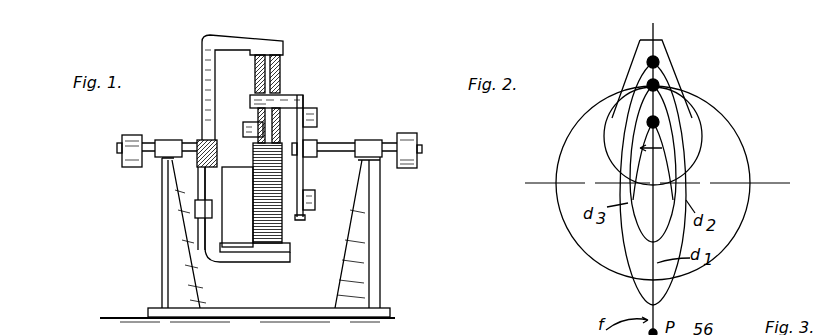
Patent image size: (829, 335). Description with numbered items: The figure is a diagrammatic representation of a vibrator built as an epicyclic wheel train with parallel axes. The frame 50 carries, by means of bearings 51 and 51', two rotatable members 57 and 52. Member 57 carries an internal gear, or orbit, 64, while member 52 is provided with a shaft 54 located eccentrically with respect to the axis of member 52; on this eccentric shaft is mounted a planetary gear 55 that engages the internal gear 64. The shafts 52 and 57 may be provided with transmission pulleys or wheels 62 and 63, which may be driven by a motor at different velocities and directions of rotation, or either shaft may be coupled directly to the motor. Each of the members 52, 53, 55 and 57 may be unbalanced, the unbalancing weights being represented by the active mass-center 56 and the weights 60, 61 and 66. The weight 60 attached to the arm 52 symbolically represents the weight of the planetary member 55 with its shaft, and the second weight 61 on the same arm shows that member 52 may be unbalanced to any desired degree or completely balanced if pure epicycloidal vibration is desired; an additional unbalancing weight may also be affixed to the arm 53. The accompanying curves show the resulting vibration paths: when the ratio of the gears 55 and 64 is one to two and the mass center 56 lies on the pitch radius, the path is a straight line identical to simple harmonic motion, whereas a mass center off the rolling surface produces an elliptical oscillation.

In FIG. 1, the frame 50 is at (378, 268).
In FIG. 1, the bearing 51 is at (167, 135).
In FIG. 1, the bearing 51' is at (374, 132).
In FIG. 1, the rotatable member 52 is at (348, 141).
In FIG. 1, the arm 53 is at (309, 137).
In FIG. 1, the shaft 54 is at (305, 97).
In FIG. 1, the planetary gear 55 is at (282, 57).
In FIG. 2, the planetary gear 55 is at (702, 125).
In FIG. 1, the active mass-center 56 is at (245, 127).
In FIG. 2, the active mass-center 56 is at (653, 62).
In FIG. 1, the rotatable member 57 is at (193, 140).
In FIG. 1, the weight 60 is at (317, 120).
In FIG. 1, the weight 61 is at (318, 202).
In FIG. 1, the transmission pulley 62 is at (403, 137).
In FIG. 1, the transmission pulley 63 is at (132, 160).
In FIG. 1, the internal gear 64 is at (272, 248).
In FIG. 2, the internal gear 64 is at (748, 163).
In FIG. 1, the unbalancing weight 66 is at (208, 205).